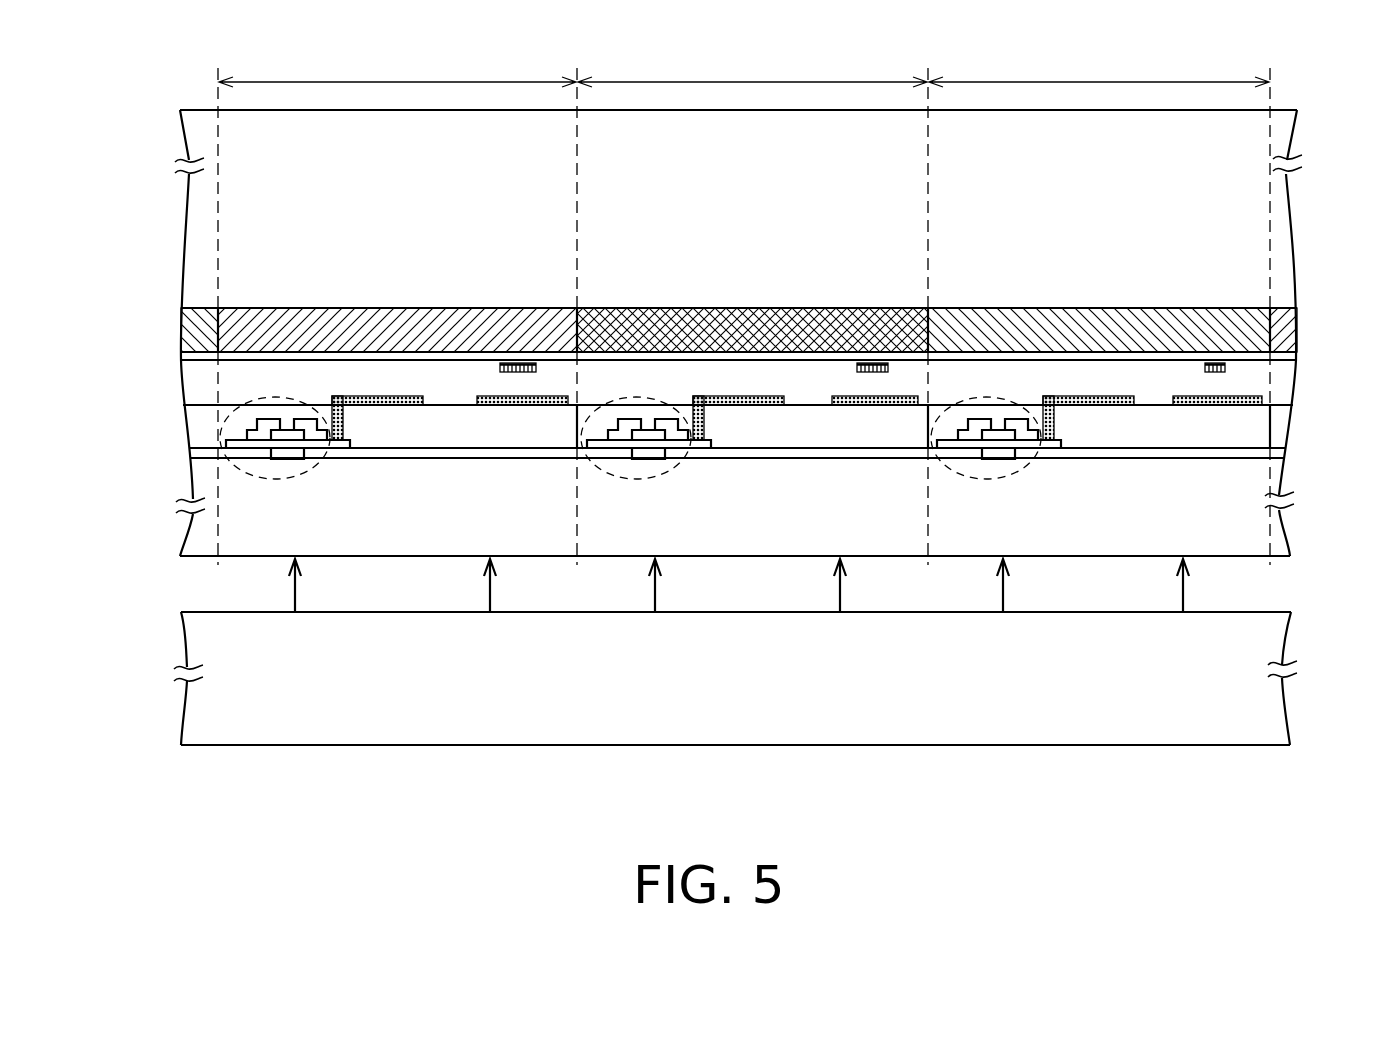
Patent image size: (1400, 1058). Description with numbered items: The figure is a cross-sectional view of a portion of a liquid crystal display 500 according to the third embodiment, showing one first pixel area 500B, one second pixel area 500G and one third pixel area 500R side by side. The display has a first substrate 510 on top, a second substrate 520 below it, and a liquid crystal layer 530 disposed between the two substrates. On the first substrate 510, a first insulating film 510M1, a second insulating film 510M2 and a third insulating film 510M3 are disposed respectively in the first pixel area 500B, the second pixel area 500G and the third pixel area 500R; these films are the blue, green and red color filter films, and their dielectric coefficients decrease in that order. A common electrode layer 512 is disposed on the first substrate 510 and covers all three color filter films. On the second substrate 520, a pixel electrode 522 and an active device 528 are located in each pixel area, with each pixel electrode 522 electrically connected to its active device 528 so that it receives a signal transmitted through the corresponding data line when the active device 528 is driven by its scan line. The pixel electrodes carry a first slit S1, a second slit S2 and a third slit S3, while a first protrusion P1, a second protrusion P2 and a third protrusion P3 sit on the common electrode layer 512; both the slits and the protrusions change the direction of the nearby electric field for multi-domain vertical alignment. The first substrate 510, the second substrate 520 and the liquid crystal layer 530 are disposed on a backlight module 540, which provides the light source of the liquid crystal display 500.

The liquid crystal display 500 is at (1362, 836).
The first pixel area 500B is at (397, 60).
The second pixel area 500G is at (752, 60).
The third pixel area 500R is at (1099, 60).
The first substrate 510 is at (1327, 111).
The first insulating film 510M1 is at (380, 330).
The second insulating film 510M2 is at (740, 328).
The third insulating film 510M3 is at (1100, 330).
The common electrode layer 512 is at (187, 357).
The second substrate 520 is at (1322, 405).
The pixel electrode 522 is at (1050, 396).
The active device 528 is at (258, 478).
The liquid crystal layer 530 is at (1339, 363).
The backlight module 540 is at (1282, 723).
The first slit S1 is at (465, 392).
The second slit S2 is at (826, 392).
The third slit S3 is at (1176, 392).
The first protrusion P1 is at (518, 372).
The second protrusion P2 is at (872, 372).
The third protrusion P3 is at (1215, 372).